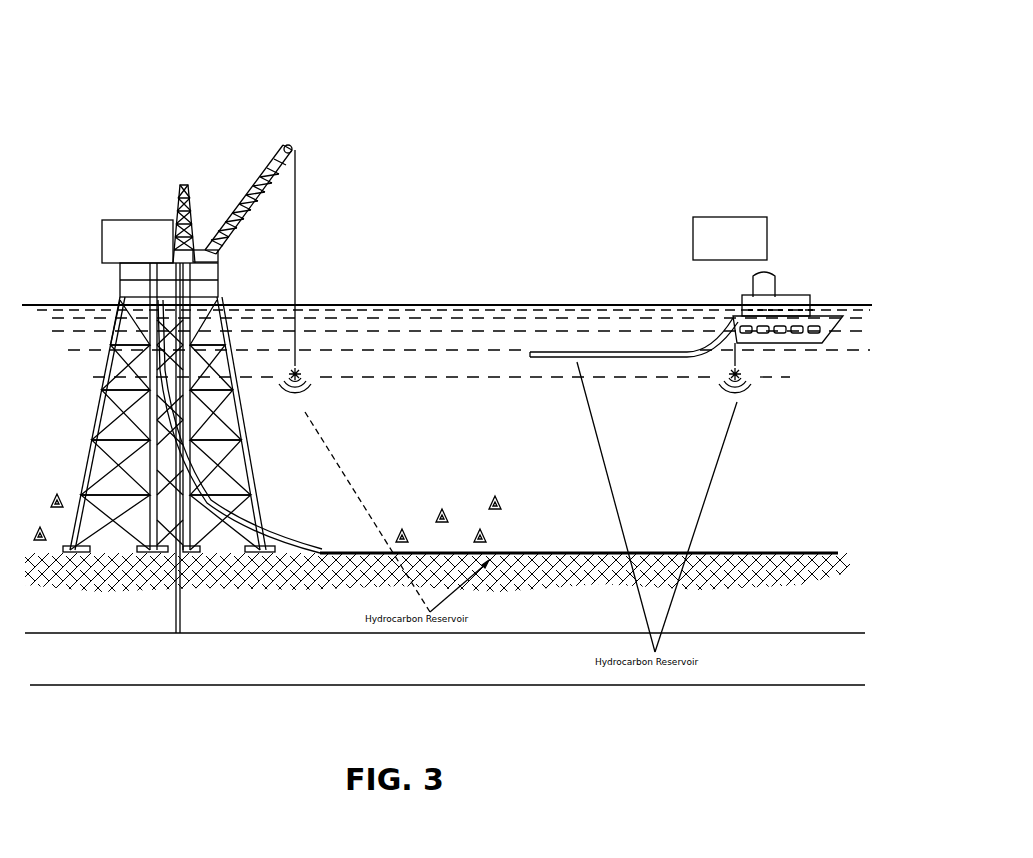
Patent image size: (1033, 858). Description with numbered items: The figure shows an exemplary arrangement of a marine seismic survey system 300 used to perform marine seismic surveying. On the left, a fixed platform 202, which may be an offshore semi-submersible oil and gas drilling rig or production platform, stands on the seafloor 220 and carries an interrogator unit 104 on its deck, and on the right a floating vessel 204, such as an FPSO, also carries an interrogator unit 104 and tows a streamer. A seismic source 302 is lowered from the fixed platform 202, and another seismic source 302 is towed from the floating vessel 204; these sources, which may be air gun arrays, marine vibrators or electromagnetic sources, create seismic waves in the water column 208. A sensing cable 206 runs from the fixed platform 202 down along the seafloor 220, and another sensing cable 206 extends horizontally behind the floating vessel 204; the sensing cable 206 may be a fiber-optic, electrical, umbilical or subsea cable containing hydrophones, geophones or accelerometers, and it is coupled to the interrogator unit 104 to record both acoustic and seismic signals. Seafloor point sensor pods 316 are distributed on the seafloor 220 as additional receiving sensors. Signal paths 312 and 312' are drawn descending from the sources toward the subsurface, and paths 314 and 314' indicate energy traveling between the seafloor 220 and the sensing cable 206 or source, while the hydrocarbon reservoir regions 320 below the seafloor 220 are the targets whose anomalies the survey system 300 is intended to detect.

The marine seismic survey system 300 is at (183, 75).
The interrogator unit 104 is at (103, 220).
The fixed platform 202 is at (100, 402).
The floating vessel 204 is at (858, 307).
The sensing cable 206 is at (320, 457).
The water column 208 is at (390, 324).
The seafloor 220 is at (850, 557).
The seismic source 302 is at (310, 398).
The first signal path 312 is at (577, 507).
The second signal path 312' is at (376, 512).
The seabed reflection path 314 is at (404, 557).
The return signal path 314' is at (726, 527).
The sensor pods 316 is at (487, 537).
The hydrocarbon reservoir 320 is at (425, 620).